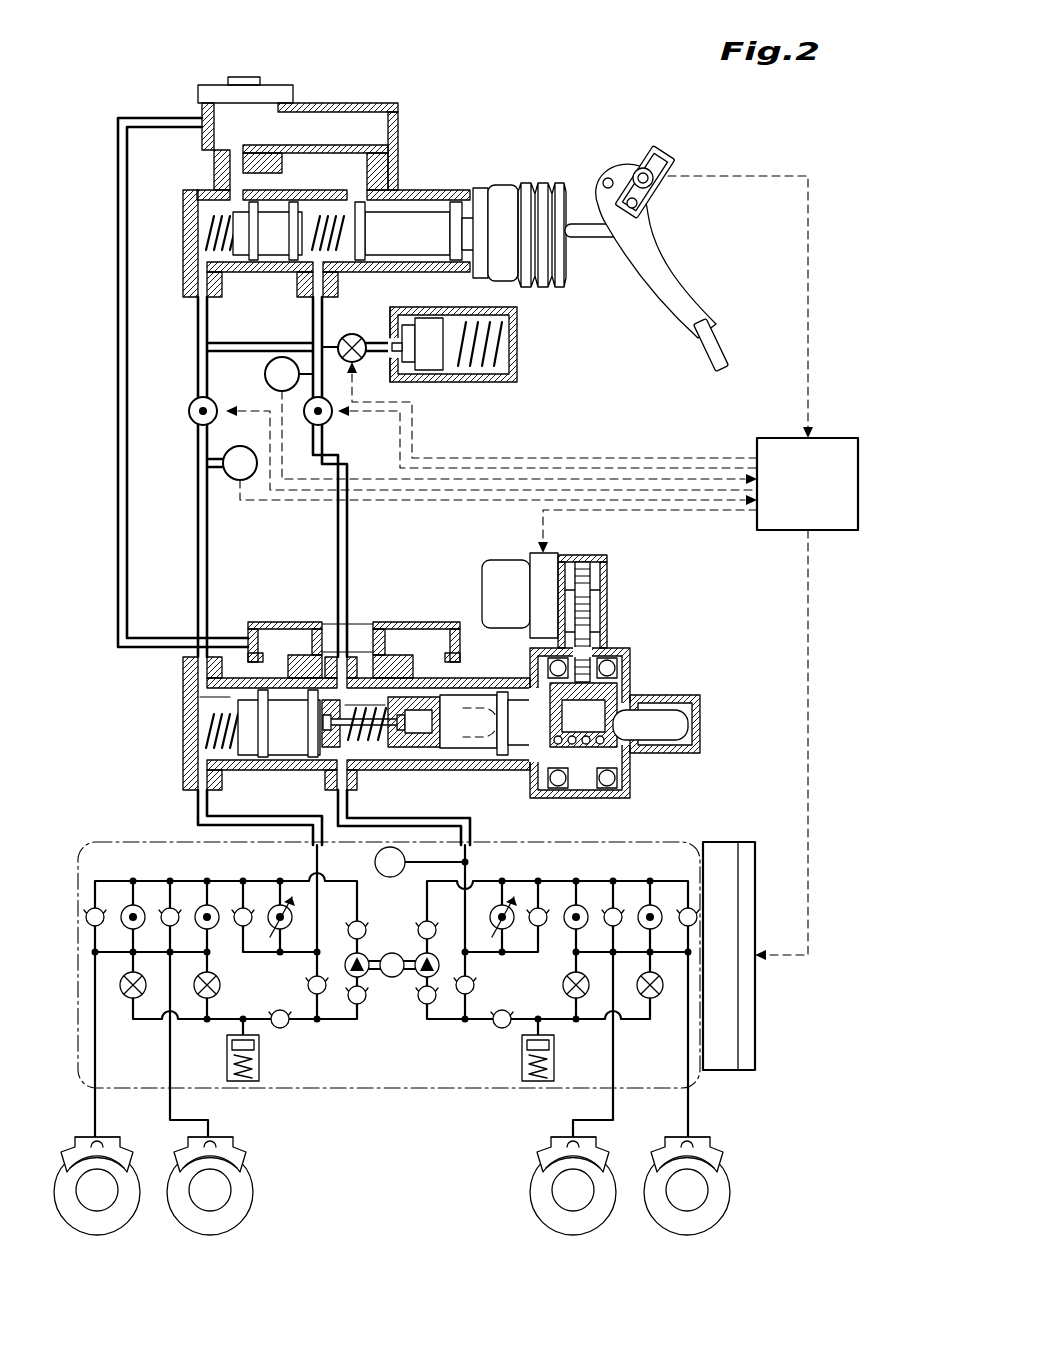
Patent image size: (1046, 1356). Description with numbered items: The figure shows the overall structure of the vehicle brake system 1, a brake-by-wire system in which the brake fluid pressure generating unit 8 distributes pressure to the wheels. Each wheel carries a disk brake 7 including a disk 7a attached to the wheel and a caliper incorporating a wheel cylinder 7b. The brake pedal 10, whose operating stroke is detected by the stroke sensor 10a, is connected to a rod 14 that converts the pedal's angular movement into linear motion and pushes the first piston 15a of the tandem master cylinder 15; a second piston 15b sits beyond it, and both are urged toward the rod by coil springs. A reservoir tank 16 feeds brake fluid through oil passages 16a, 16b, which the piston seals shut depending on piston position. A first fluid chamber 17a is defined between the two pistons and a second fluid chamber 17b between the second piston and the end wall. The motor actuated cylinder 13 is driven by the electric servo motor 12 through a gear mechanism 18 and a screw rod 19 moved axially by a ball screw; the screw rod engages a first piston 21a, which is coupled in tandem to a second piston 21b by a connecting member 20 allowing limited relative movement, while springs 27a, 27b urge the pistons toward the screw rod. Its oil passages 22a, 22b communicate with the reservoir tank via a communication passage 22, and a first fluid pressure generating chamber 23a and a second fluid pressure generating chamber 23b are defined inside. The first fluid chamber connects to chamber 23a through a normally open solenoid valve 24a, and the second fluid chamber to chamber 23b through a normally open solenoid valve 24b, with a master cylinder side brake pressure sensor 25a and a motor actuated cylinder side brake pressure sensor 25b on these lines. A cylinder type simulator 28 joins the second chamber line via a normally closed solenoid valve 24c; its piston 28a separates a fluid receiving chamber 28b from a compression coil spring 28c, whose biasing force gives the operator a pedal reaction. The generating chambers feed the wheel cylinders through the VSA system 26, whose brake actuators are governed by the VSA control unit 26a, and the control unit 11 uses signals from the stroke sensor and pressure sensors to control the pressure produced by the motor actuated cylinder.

The brake system 1 is at (113, 50).
The disk brake 7 is at (421, 1199).
The disk 7a is at (125, 1178).
The wheel cylinder 7b is at (108, 1138).
The brake fluid pressure generating unit 8 is at (542, 100).
The brake pedal 10 is at (662, 238).
The stroke sensor 10a is at (648, 165).
The control unit 11 is at (825, 437).
The electric servo motor 12 is at (502, 557).
The motor actuated cylinder 13 is at (429, 668).
The rod 14 is at (580, 225).
The master cylinder 15 is at (325, 167).
The first piston 15a is at (415, 220).
The second piston 15b is at (272, 245).
The reservoir tank 16 is at (298, 110).
The oil passage 16a is at (360, 150).
The oil passage 16b is at (237, 150).
The first fluid chamber 17a is at (330, 215).
The second fluid chamber 17b is at (210, 205).
The gear mechanism 18 is at (612, 572).
The screw rod 19 is at (665, 745).
The connecting member 20 is at (335, 700).
The first piston 21a is at (455, 742).
The second piston 21b is at (287, 745).
The communication passage 22 is at (118, 268).
The oil passage 22a is at (428, 655).
The oil passage 22b is at (272, 660).
The first fluid pressure generating chamber 23a is at (378, 695).
The second fluid pressure generating chamber 23b is at (205, 697).
The normally open solenoid valve 24a is at (332, 421).
The normally open solenoid valve 24b is at (192, 423).
The normally closed solenoid valve 24c is at (355, 334).
The master cylinder side brake pressure sensor 25a is at (265, 373).
The motor actuated cylinder side brake pressure sensor 25b is at (238, 481).
The VSA system 26 is at (158, 842).
The VSA control unit 26a is at (725, 842).
The spring 27a is at (372, 745).
The spring 27b is at (215, 725).
The simulator 28 is at (482, 353).
The piston 28a is at (428, 325).
The fluid receiving chamber 28b is at (405, 365).
The compression coil spring 28c is at (485, 362).